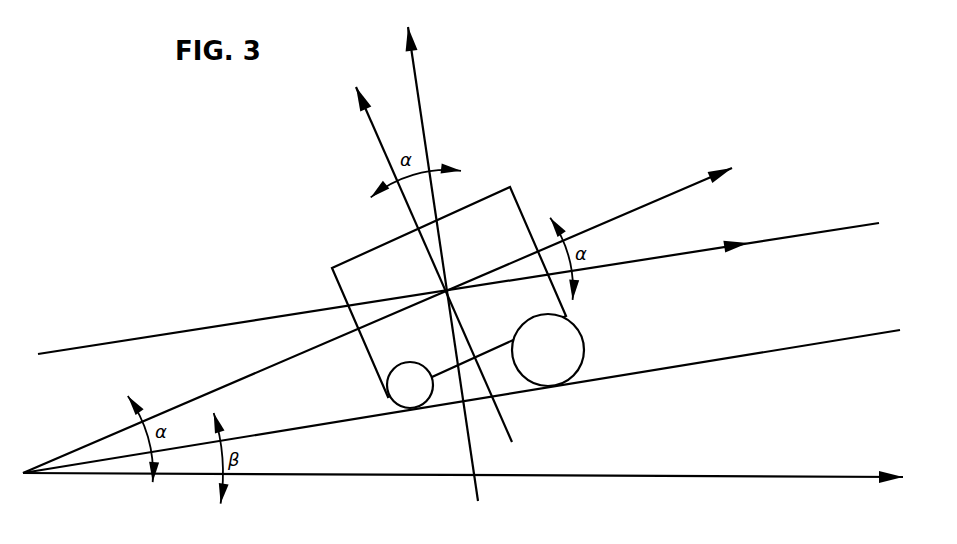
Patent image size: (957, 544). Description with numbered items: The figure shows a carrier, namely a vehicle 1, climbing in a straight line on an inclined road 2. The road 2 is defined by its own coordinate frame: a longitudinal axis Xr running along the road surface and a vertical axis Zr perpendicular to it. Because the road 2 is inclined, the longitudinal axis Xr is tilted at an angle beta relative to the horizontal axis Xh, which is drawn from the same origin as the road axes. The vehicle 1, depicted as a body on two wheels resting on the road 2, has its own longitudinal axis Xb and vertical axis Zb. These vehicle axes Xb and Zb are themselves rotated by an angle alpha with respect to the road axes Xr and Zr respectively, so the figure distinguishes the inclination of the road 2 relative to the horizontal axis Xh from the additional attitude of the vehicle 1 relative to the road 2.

The vehicle 1 is at (511, 186).
The road 2 is at (810, 344).
The vertical axis of the road Zr is at (442, 264).
The vertical axis of the vehicle Zb is at (418, 264).
The longitudinal axis of the road Xr is at (458, 288).
The longitudinal axis of the vehicle Xb is at (383, 320).
The horizontal axis Xh is at (465, 491).